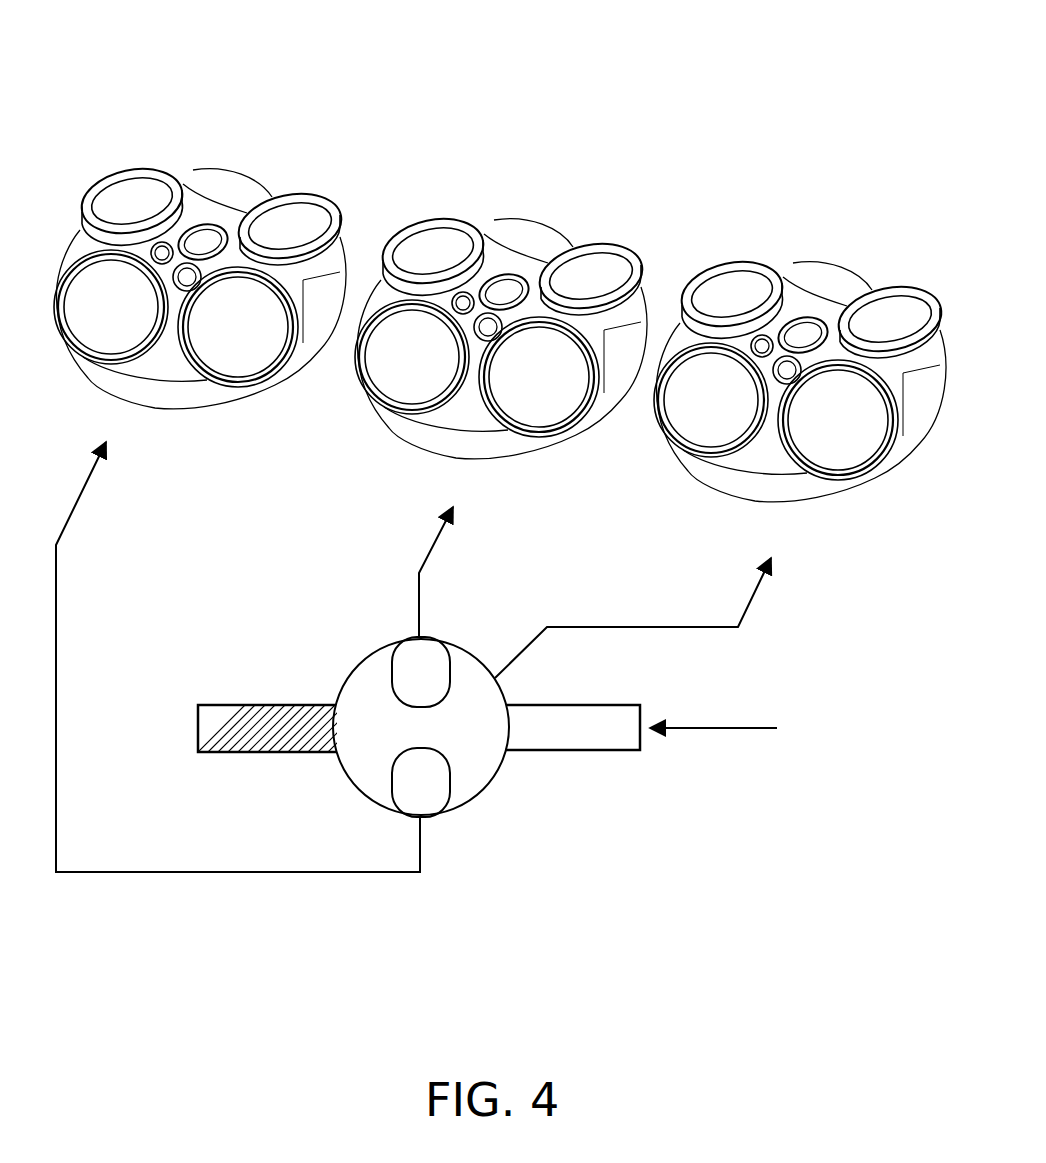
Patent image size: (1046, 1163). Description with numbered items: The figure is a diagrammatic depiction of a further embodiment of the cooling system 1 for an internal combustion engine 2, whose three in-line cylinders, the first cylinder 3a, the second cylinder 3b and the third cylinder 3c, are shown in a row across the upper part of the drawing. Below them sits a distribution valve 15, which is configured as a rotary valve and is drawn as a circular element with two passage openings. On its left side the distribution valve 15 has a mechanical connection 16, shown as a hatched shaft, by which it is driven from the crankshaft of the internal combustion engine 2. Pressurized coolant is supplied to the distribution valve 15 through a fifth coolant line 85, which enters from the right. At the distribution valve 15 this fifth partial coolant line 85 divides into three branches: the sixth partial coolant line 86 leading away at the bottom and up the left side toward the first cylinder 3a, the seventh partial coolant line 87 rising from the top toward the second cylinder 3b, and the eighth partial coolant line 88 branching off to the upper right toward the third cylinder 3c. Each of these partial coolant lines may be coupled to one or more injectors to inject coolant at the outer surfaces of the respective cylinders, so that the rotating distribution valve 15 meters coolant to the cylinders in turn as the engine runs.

The cooling system 1 is at (692, 875).
The internal combustion engine 2 is at (519, 99).
The first cylinder 3a is at (223, 172).
The second cylinder 3b is at (524, 222).
The third cylinder 3c is at (822, 268).
The distribution valve 15 is at (495, 790).
The mechanical connection 16 is at (263, 703).
The fifth coolant line 85 is at (743, 720).
The sixth partial coolant line 86 is at (286, 874).
The seventh partial coolant line 87 is at (427, 552).
The eighth partial coolant line 88 is at (652, 625).